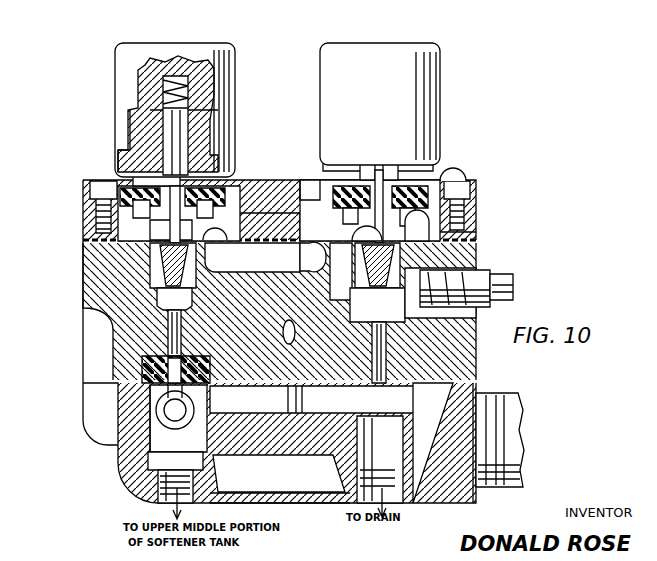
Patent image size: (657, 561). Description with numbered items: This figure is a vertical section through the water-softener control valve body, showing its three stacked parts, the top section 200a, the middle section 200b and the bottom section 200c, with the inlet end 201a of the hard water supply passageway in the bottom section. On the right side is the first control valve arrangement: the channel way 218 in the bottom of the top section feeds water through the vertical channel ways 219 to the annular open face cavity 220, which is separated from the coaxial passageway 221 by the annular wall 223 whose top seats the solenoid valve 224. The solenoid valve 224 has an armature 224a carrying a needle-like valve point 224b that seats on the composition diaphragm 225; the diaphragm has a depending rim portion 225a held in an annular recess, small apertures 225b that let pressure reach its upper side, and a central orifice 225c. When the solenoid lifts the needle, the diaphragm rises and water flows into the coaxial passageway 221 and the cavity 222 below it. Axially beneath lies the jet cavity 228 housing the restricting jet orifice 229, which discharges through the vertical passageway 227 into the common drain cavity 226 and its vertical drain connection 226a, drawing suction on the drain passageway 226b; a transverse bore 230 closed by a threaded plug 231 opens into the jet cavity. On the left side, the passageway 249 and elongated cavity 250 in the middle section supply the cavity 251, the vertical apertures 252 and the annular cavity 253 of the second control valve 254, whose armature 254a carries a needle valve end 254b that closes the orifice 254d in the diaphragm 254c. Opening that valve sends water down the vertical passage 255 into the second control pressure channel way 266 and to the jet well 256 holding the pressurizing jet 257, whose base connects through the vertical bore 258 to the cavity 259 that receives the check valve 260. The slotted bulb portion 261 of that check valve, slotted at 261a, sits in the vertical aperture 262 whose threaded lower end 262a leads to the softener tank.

The top section 200a is at (75, 240).
The middle section 200b is at (75, 297).
The bottom section 200c is at (75, 408).
The inlet end 201a is at (520, 425).
The channel way 218 is at (472, 224).
The vertical channel ways 219 is at (412, 243).
The annular open face cavity 220 is at (334, 206).
The coaxial passageway 221 is at (390, 170).
The cavity 222 is at (352, 234).
The annular wall 223 is at (345, 218).
The solenoid valve 224 is at (341, 42).
The armature 224a is at (390, 162).
The needle-like valve point 224b is at (365, 162).
The composition diaphragm 225 is at (325, 182).
The depending rim portion 225a is at (472, 194).
The small apertures 225b is at (450, 176).
The orifice 225c is at (360, 170).
The common drain cavity 226 is at (306, 416).
The vertical drain connection 226a is at (351, 440).
The drain passageway 226b is at (294, 332).
The vertical passageway 227 is at (386, 350).
The jet cavity 228 is at (392, 252).
The restricting jet orifice 229 is at (364, 267).
The transverse bore 230 is at (400, 310).
The threaded plug 231 is at (480, 270).
The passageway 249 is at (312, 270).
The elongated cavity 250 is at (248, 265).
The cavity 251 is at (222, 244).
The vertical apertures 252 is at (222, 226).
The annular cavity 253 is at (95, 212).
The second control valve 254 is at (200, 42).
The armature 254a is at (172, 128).
The needle valve end 254b is at (175, 184).
The diaphragm 254c is at (160, 86).
The orifice 254d is at (188, 212).
The vertical passage 255 is at (155, 226).
The jet well 256 is at (157, 298).
The pressurizing jet 257 is at (162, 276).
The vertical bore 258 is at (168, 330).
The cavity 259 is at (146, 359).
The check valve 260 is at (146, 371).
The bulb portion 261 is at (156, 405).
The slot 261a is at (200, 416).
The vertical aperture 262 is at (145, 432).
The threaded lower end 262a is at (158, 506).
The second control pressure channel way 266 is at (146, 246).